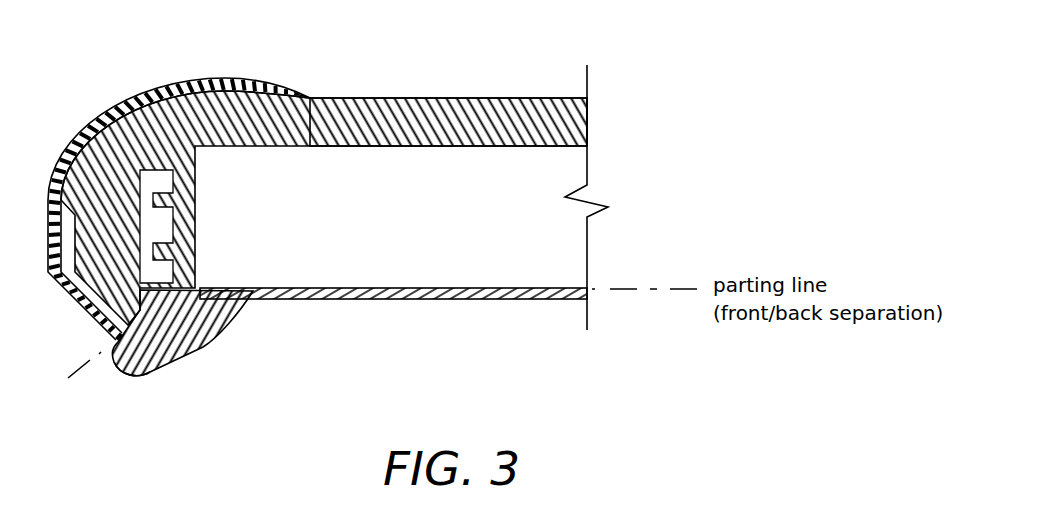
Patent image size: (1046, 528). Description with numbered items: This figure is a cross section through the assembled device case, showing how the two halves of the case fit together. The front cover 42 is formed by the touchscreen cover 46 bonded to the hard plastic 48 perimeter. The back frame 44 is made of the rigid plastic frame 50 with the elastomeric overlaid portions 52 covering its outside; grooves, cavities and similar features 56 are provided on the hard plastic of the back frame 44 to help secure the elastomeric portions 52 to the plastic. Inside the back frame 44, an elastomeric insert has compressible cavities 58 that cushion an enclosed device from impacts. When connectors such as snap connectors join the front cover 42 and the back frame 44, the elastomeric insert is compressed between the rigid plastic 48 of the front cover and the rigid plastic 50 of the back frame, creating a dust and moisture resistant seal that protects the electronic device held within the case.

The front cover 42 is at (203, 348).
The back frame 44 is at (472, 82).
The touchscreen cover 46 is at (410, 299).
The hard plastic perimeter 48 is at (143, 377).
The rigid plastic frame 50 is at (578, 120).
The elastomeric overlaid portions 52 is at (118, 137).
The grooves, cavities and similar features 56 is at (310, 97).
The compressible cavities 58 is at (167, 276).